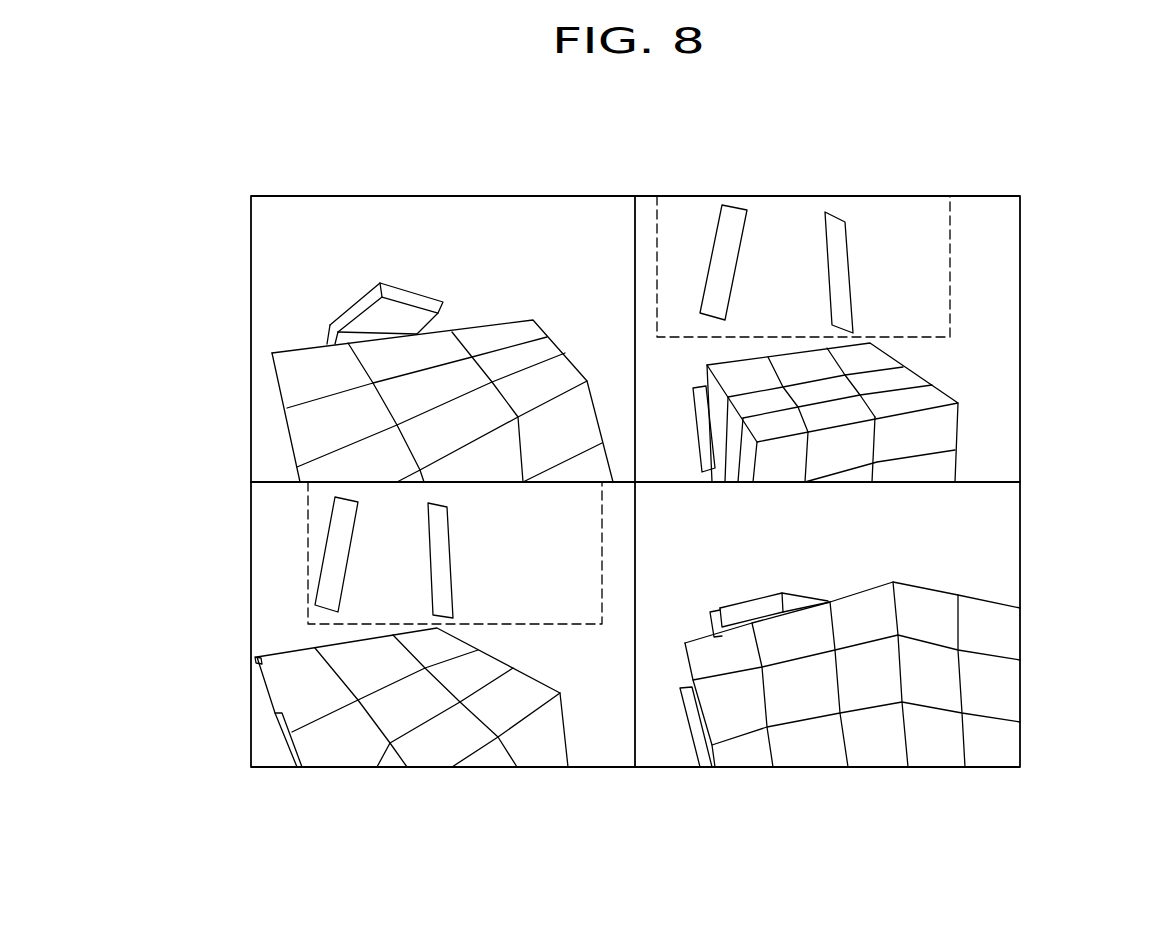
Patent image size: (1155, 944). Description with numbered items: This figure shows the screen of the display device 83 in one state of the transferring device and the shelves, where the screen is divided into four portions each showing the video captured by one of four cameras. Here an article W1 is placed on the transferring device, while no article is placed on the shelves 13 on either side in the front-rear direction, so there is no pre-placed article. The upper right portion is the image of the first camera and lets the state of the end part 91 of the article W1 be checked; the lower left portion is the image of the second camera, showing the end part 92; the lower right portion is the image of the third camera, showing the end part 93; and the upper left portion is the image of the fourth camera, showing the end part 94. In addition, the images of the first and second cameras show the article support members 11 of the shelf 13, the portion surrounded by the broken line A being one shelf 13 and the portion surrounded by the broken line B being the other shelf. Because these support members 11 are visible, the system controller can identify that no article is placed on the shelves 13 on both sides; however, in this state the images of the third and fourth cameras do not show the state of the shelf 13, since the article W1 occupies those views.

The display device 83 is at (607, 195).
The end part of the article 94 is at (446, 445).
The end part of the article 91 is at (844, 409).
The end part of the article 92 is at (424, 712).
The end part of the article 93 is at (818, 704).
The shelf 13 is at (802, 285).
The article support member 11 is at (731, 218).
The broken line A is at (950, 282).
The broken line B is at (308, 548).
The article W1 is at (270, 421).